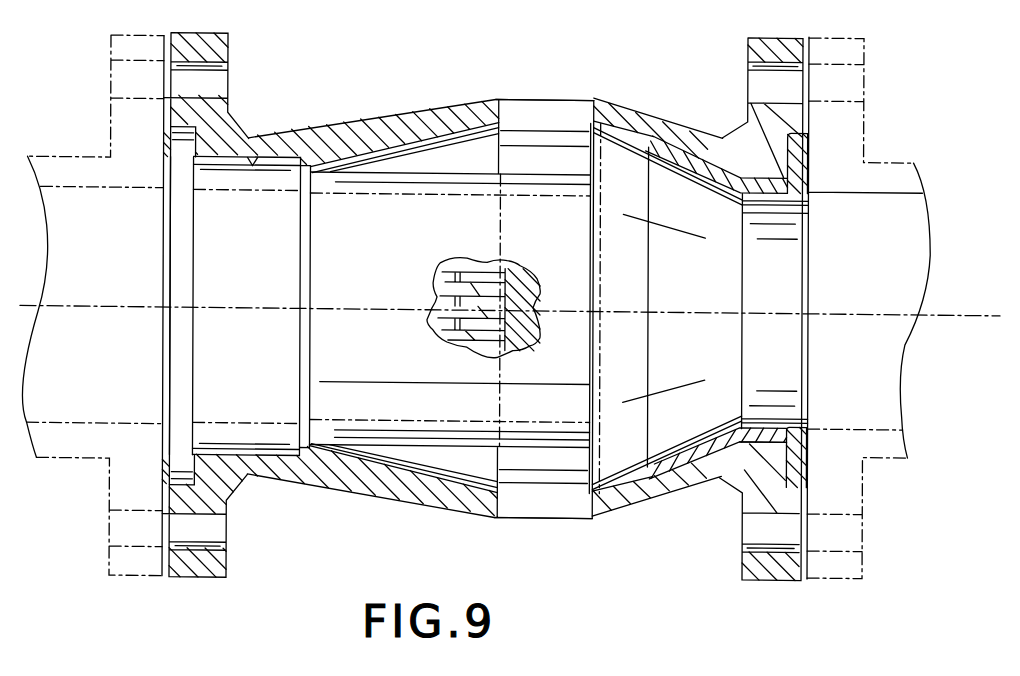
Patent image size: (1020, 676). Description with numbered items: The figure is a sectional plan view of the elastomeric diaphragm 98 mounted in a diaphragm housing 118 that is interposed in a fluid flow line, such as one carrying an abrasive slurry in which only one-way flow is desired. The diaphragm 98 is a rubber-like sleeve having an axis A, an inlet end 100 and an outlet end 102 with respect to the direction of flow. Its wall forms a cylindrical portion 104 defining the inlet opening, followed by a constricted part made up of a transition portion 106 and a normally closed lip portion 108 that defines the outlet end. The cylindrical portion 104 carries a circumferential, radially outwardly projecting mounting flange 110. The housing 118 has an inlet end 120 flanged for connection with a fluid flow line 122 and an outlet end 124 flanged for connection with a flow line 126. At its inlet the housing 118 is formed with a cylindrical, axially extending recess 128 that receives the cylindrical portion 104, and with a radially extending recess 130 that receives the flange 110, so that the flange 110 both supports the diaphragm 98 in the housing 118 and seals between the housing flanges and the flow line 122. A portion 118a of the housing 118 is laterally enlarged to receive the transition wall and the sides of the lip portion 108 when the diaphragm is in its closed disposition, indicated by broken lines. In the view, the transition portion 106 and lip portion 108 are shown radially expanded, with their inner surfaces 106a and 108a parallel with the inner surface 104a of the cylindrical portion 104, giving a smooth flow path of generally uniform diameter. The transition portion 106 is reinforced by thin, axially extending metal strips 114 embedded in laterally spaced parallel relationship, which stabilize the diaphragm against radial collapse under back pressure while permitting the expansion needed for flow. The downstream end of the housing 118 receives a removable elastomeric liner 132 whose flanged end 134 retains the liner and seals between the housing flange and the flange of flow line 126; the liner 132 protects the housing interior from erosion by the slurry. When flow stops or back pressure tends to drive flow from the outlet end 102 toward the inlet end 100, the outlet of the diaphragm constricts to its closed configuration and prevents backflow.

The diaphragm 98 is at (460, 148).
The inlet end 100 is at (158, 300).
The outlet end 102 is at (600, 284).
The cylindrical portion 104 is at (287, 456).
The inner surface of cylindrical portion 104a is at (232, 418).
The transition portion 106 is at (442, 447).
The inner surface of transition portion 106a is at (413, 420).
The lip portion 108 is at (557, 449).
The inner surface of lip portion 108a is at (540, 420).
The mounting flange 110 is at (183, 218).
The thin metal strips 114 is at (487, 288).
The diaphragm housing 118 is at (423, 100).
The laterally enlarged housing portion 118a is at (548, 98).
The inlet end of housing 120 is at (262, 43).
The fluid flow line 122 is at (55, 155).
The outlet end of housing 124 is at (745, 48).
The flow line 126 is at (870, 180).
The cylindrical axially extending recess 128 is at (252, 160).
The radially extending recess 130 is at (190, 140).
The removable liner 132 is at (675, 155).
The flanged end of liner 134 is at (808, 157).
The diaphragm axis A is at (400, 307).